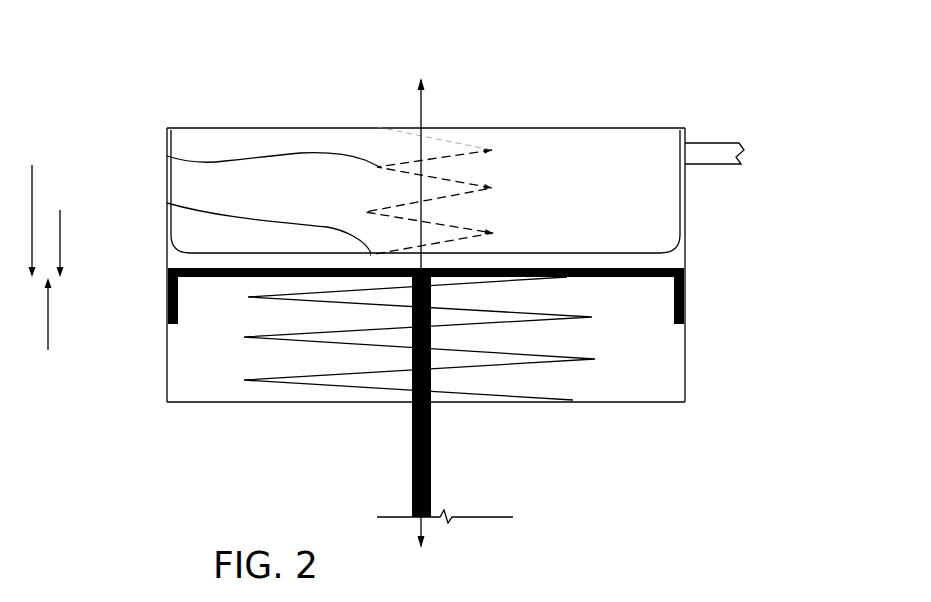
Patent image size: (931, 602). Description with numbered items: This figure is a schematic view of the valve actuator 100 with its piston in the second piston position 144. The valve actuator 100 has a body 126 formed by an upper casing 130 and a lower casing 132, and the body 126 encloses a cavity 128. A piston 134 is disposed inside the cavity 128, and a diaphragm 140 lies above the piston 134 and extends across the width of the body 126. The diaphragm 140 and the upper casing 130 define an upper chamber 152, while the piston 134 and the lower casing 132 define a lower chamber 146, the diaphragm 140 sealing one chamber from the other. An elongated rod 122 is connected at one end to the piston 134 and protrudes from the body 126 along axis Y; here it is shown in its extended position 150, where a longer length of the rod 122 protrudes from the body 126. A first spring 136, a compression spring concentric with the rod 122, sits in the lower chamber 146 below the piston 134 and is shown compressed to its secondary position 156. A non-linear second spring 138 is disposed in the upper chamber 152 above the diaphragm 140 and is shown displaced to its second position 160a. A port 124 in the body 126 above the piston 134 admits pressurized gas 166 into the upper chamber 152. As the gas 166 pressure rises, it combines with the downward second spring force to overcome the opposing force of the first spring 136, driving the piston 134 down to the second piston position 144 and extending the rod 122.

The valve actuator 100 is at (217, 66).
The rod 122 is at (418, 408).
The port 124 is at (688, 155).
The body 126 is at (690, 383).
The cavity 128 is at (572, 157).
The upper casing 130 is at (210, 128).
The lower casing 132 is at (643, 402).
The piston 134 is at (627, 277).
The first spring 136 is at (262, 380).
The second spring 138 is at (167, 156).
The diaphragm 140 is at (675, 260).
The second piston position 144 is at (690, 271).
The lower chamber 146 is at (182, 363).
The extended position 150 is at (402, 477).
The upper chamber 152 is at (511, 157).
The secondary position 156 is at (590, 277).
The second position 160a is at (167, 203).
The pressurized gas 166 is at (322, 140).